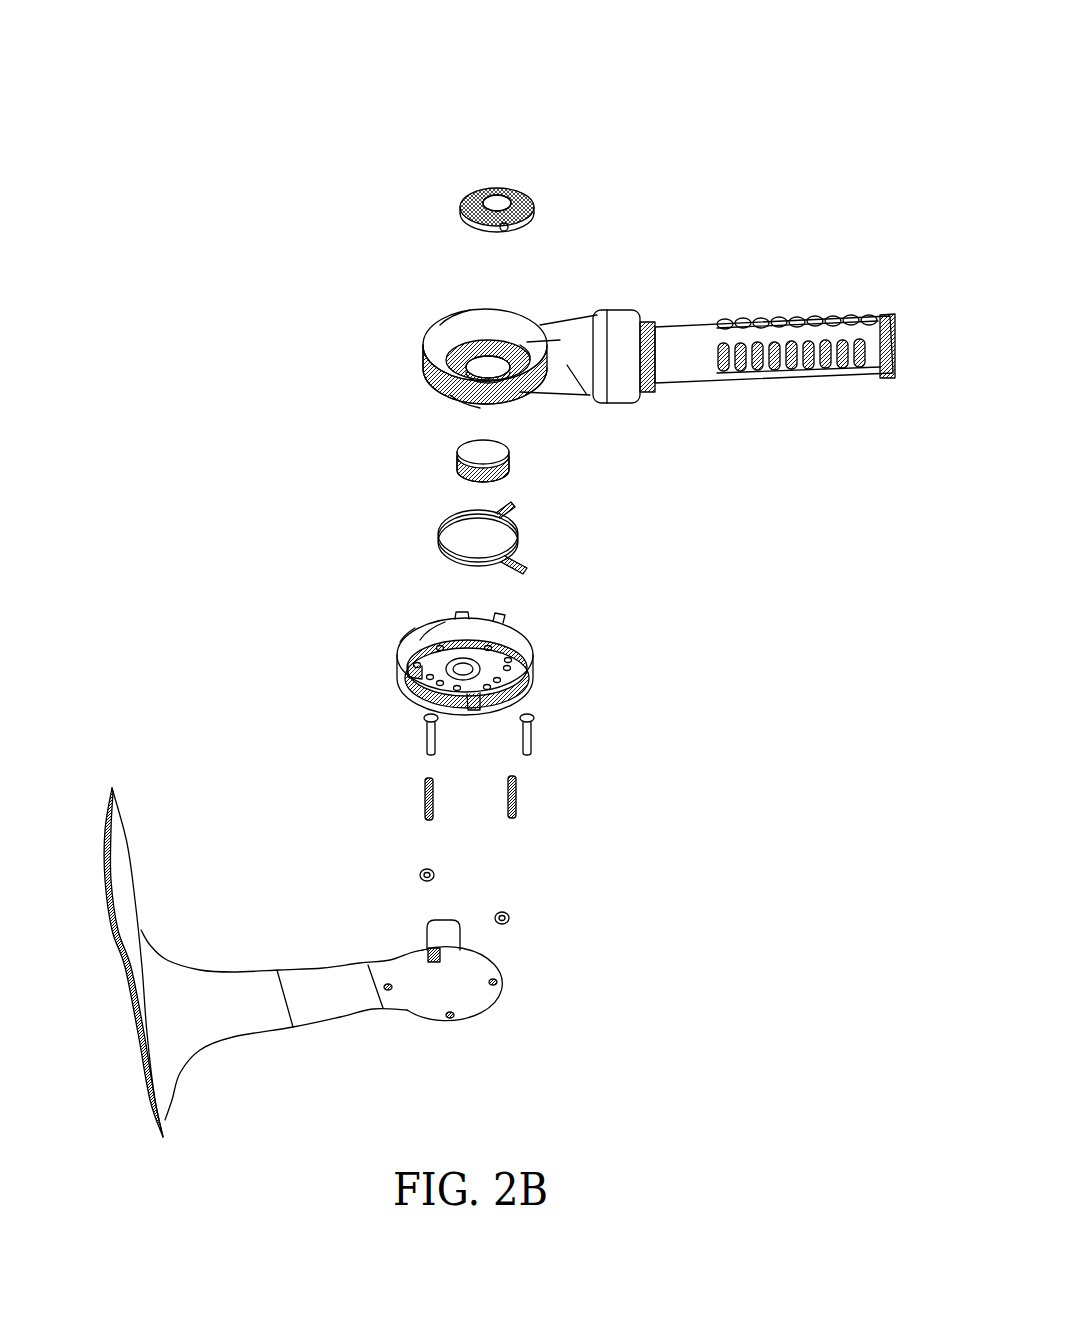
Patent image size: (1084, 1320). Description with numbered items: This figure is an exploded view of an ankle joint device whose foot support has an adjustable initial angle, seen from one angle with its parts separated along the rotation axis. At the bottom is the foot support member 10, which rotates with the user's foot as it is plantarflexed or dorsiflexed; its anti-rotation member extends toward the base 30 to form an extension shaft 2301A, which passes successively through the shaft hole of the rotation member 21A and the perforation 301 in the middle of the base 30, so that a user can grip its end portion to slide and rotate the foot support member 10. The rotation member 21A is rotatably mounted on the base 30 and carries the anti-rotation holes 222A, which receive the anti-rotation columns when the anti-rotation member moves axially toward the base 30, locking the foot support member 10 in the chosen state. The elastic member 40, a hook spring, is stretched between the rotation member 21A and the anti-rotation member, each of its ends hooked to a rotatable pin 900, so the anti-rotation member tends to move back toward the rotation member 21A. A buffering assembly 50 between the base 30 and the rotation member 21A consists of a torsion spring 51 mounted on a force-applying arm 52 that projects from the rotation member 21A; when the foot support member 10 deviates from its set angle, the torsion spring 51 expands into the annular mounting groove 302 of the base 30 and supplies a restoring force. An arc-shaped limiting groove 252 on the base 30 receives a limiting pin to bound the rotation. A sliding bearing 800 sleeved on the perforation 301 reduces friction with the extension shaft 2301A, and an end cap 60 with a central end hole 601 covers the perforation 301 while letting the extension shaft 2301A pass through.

The foot support member 10 is at (303, 934).
The extension shaft 2301A is at (347, 828).
The rotation member 21A is at (351, 559).
The anti-rotation holes 222A is at (431, 645).
The base 30 is at (659, 303).
The perforation 301 is at (495, 370).
The annular mounting groove 302 is at (520, 357).
The arc-shaped limiting groove 252 is at (472, 395).
The elastic member 40 is at (495, 834).
The buffering assembly 50 is at (695, 700).
The torsion spring 51 is at (549, 560).
The force-applying arm 52 is at (536, 673).
The end cap 60 is at (530, 148).
The end hole 601 is at (497, 200).
The sliding bearing 800 is at (568, 493).
The pin 900 is at (546, 853).